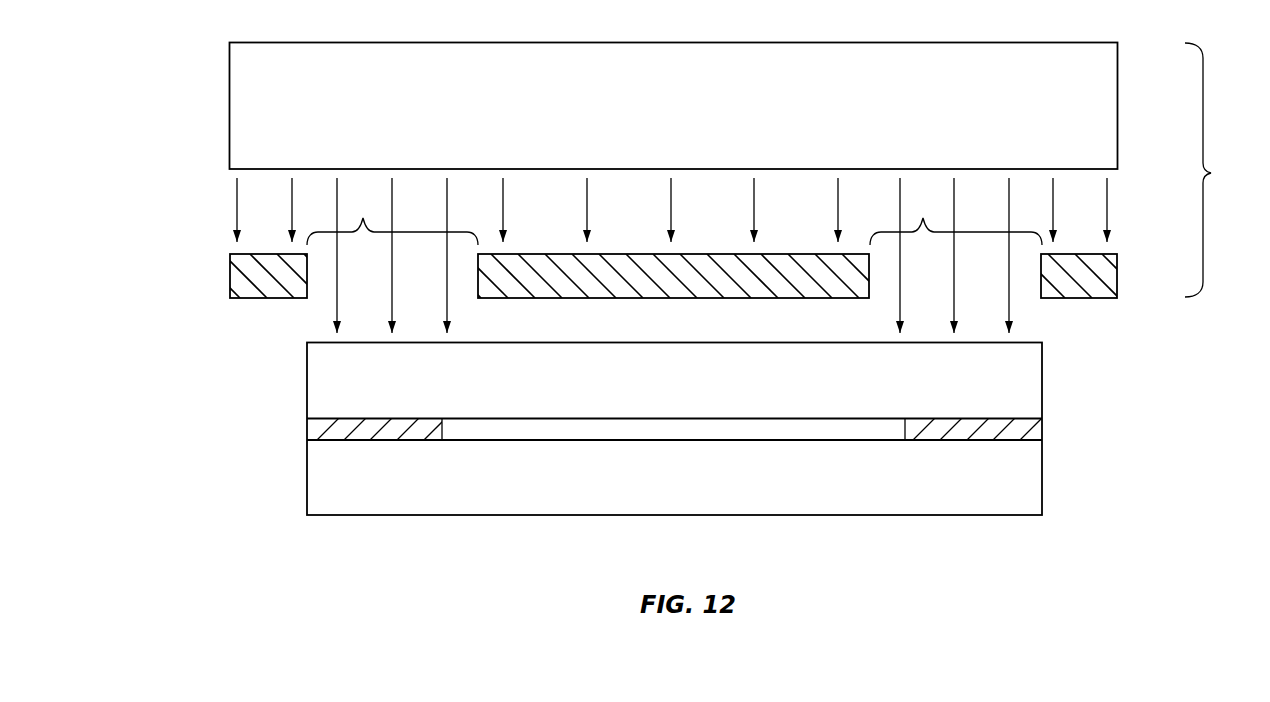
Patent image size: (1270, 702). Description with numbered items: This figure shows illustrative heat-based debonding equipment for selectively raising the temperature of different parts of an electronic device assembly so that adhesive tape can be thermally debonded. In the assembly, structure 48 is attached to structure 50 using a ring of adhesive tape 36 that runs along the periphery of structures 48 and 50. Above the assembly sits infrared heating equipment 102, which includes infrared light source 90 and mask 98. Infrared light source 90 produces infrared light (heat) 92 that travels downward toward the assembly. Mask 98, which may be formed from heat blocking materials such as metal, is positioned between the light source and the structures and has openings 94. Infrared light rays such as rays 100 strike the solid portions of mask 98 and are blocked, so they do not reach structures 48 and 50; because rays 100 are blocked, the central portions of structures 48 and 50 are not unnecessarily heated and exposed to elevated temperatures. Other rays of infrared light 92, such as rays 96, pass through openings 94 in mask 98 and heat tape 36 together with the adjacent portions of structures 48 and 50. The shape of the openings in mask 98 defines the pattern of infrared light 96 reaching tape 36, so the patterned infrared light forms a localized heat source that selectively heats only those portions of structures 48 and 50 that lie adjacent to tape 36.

The infrared light source 90 is at (1108, 112).
The infrared light 92 is at (1124, 206).
The openings 94 is at (674, 221).
The rays 96 is at (338, 307).
The mask 98 is at (230, 280).
The rays 100 is at (237, 209).
The infrared heating equipment 102 is at (1217, 170).
The structure 48 is at (312, 382).
The adhesive tape 36 is at (312, 430).
The structure 50 is at (312, 477).